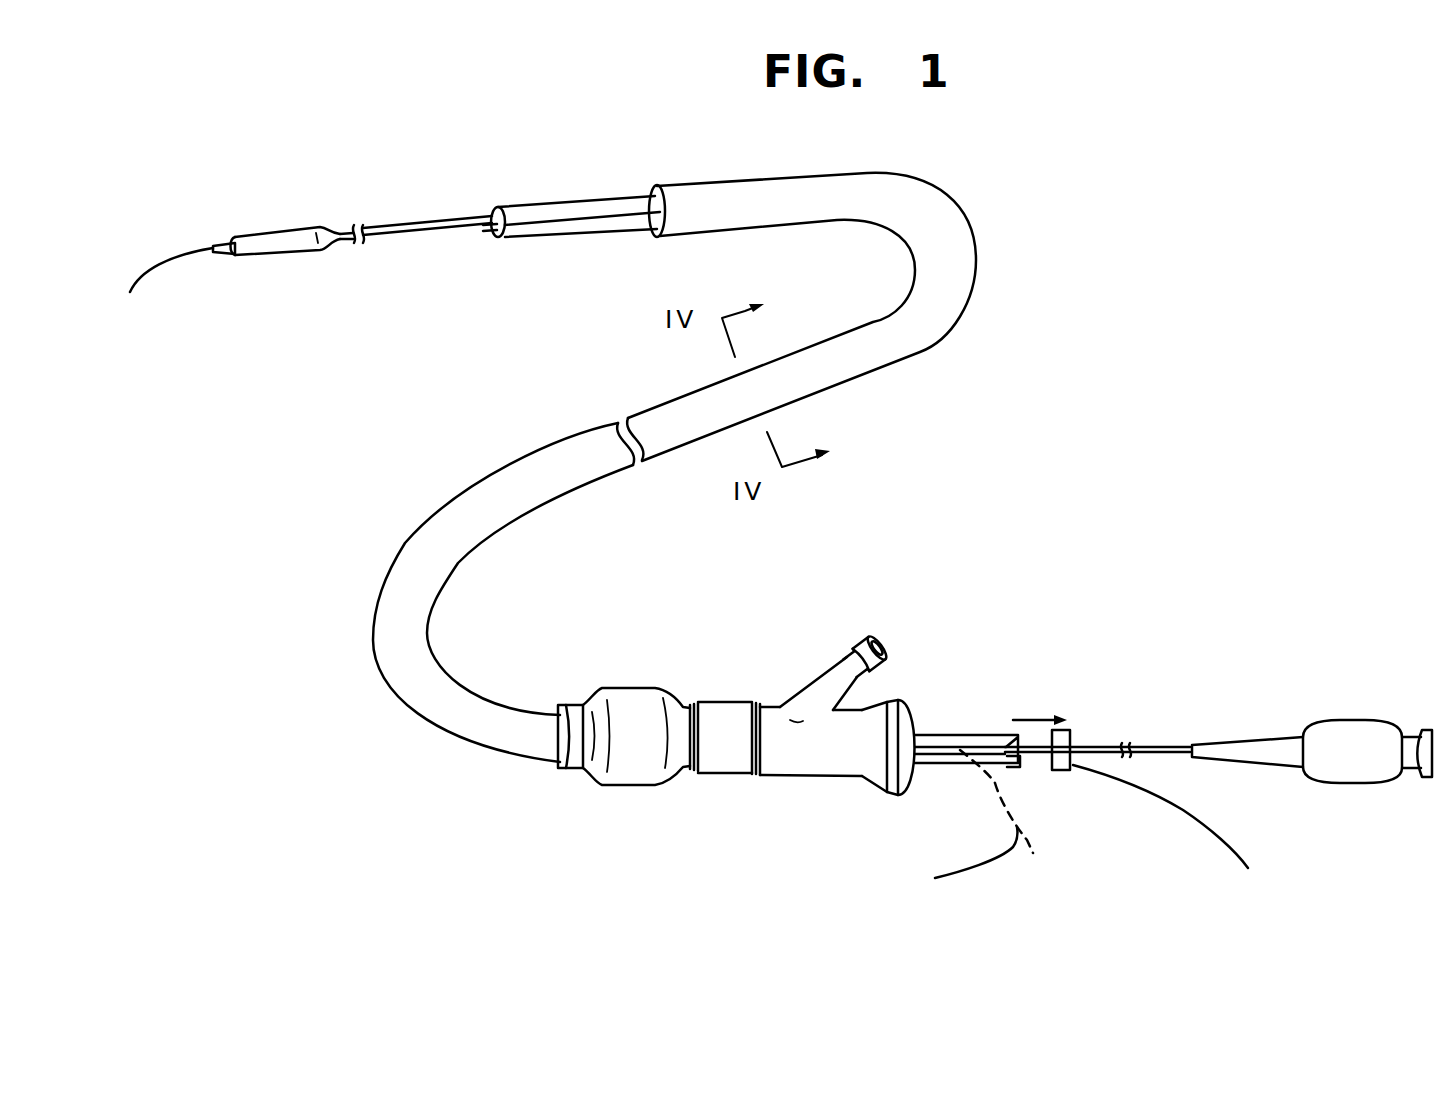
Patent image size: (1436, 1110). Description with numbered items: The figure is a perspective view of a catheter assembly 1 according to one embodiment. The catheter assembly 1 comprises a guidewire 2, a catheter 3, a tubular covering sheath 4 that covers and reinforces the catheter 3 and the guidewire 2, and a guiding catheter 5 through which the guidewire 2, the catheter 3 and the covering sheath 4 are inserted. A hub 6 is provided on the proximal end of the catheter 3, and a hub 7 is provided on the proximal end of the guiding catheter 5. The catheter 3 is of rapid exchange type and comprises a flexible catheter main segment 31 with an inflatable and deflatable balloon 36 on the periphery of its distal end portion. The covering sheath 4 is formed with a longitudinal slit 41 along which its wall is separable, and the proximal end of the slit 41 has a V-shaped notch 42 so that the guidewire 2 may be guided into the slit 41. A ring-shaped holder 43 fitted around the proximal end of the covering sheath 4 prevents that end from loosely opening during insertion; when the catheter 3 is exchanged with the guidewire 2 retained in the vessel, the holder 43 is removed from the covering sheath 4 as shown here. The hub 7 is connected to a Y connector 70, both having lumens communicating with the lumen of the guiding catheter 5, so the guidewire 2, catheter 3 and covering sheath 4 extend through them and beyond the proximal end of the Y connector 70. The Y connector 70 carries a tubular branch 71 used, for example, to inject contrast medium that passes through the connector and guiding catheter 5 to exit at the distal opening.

The catheter assembly 1 is at (1056, 444).
The guidewire 2 is at (188, 252).
The catheter 3 is at (390, 218).
The catheter main segment 31 is at (430, 226).
The balloon 36 is at (281, 240).
The covering sheath 4 is at (595, 213).
The slit 41 is at (567, 222).
The V-shaped notch 42 is at (1016, 752).
The holder 43 is at (1060, 763).
The guiding catheter 5 is at (448, 527).
The hub 6 is at (1348, 737).
The hub 7 is at (658, 767).
The Y connector 70 is at (830, 758).
The tubular branch 71 is at (835, 680).